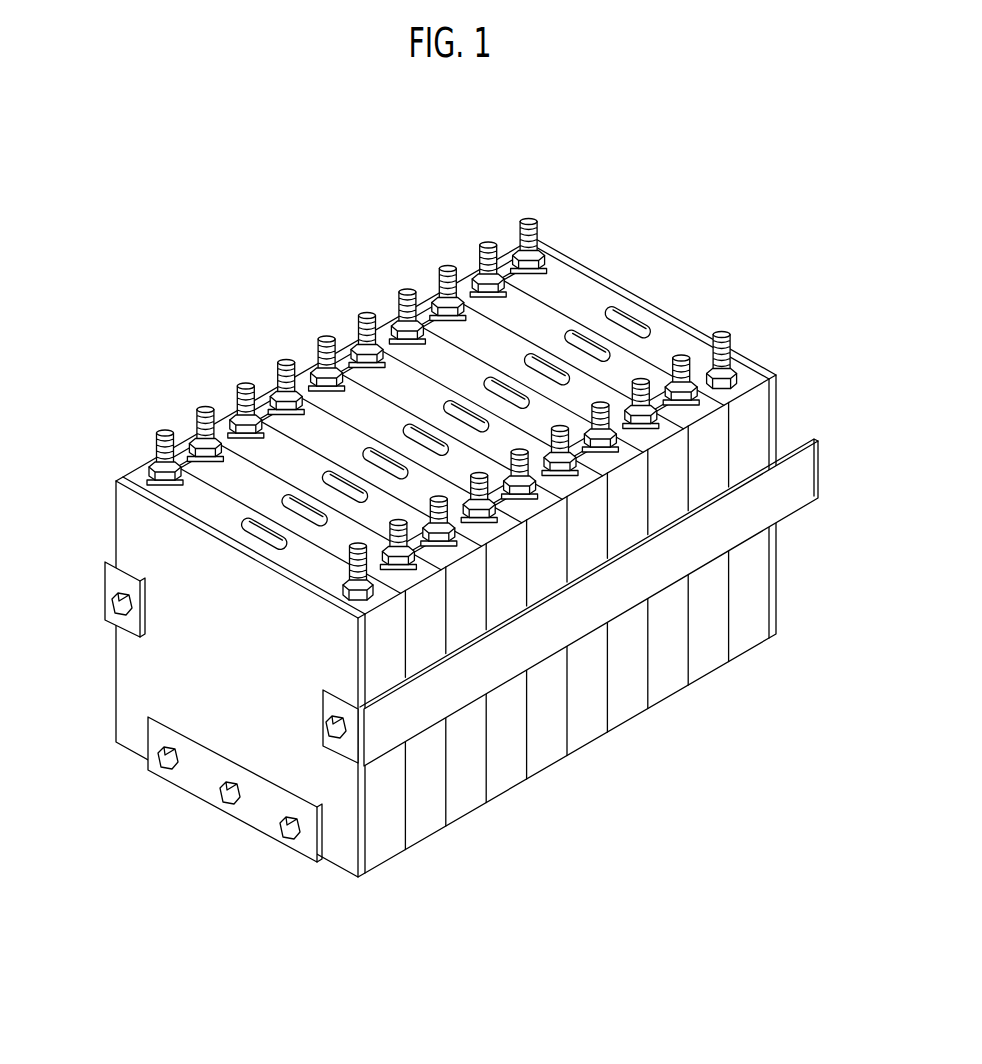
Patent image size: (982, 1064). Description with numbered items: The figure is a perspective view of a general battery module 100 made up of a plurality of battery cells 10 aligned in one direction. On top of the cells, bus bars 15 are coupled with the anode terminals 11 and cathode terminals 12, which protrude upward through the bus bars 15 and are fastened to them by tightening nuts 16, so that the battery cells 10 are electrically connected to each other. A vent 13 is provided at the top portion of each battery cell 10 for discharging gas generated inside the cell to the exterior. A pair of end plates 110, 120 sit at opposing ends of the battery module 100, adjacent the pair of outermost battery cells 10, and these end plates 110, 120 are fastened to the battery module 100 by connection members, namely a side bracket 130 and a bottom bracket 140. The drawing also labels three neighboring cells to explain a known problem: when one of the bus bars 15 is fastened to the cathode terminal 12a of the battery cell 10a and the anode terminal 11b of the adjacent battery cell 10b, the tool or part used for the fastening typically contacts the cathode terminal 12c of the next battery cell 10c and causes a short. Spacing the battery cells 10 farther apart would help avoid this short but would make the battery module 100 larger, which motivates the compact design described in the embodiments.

The battery module 100 is at (177, 267).
The battery cells 10 is at (702, 597).
The battery cell 10a is at (381, 860).
The adjacent battery cell 10b is at (420, 838).
The battery cell 10c is at (460, 813).
The anode terminals 11 is at (530, 218).
The anode terminal 11b is at (207, 409).
The cathode terminals 12 is at (723, 329).
The cathode terminal 12a is at (163, 433).
The cathode terminal 12c is at (244, 392).
The vent 13 is at (622, 312).
The bus bars 15 is at (190, 448).
The nuts 16 is at (230, 412).
The end plate 110 is at (143, 686).
The end plate 120 is at (777, 572).
The side bracket 130 is at (103, 593).
The bottom bracket 140 is at (207, 775).